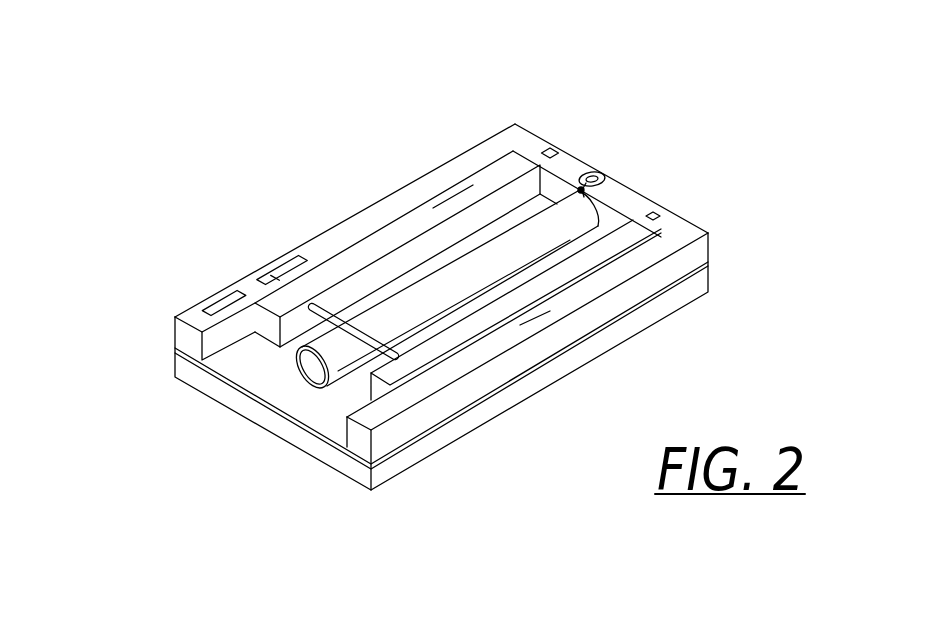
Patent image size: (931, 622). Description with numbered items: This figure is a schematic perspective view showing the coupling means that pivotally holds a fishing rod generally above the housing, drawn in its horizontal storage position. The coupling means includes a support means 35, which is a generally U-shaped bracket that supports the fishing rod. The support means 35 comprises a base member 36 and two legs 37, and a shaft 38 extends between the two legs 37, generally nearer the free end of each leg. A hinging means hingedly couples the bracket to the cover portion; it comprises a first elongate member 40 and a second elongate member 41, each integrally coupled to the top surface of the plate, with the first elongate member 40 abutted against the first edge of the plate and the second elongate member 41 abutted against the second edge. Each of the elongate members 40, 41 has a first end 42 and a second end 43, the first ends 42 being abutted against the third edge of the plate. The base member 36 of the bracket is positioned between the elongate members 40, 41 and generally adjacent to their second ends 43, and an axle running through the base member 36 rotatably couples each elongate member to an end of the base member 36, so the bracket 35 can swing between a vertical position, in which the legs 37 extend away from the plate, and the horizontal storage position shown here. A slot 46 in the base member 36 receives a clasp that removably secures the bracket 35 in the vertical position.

The support means 35 is at (673, 212).
The base member 36 is at (621, 172).
The legs 37 is at (492, 175).
The shaft 38 is at (297, 376).
The first elongate member 40 is at (357, 213).
The second elongate member 41 is at (598, 316).
The first end 42 is at (515, 123).
The second end 43 is at (175, 317).
The slot 46 is at (549, 148).